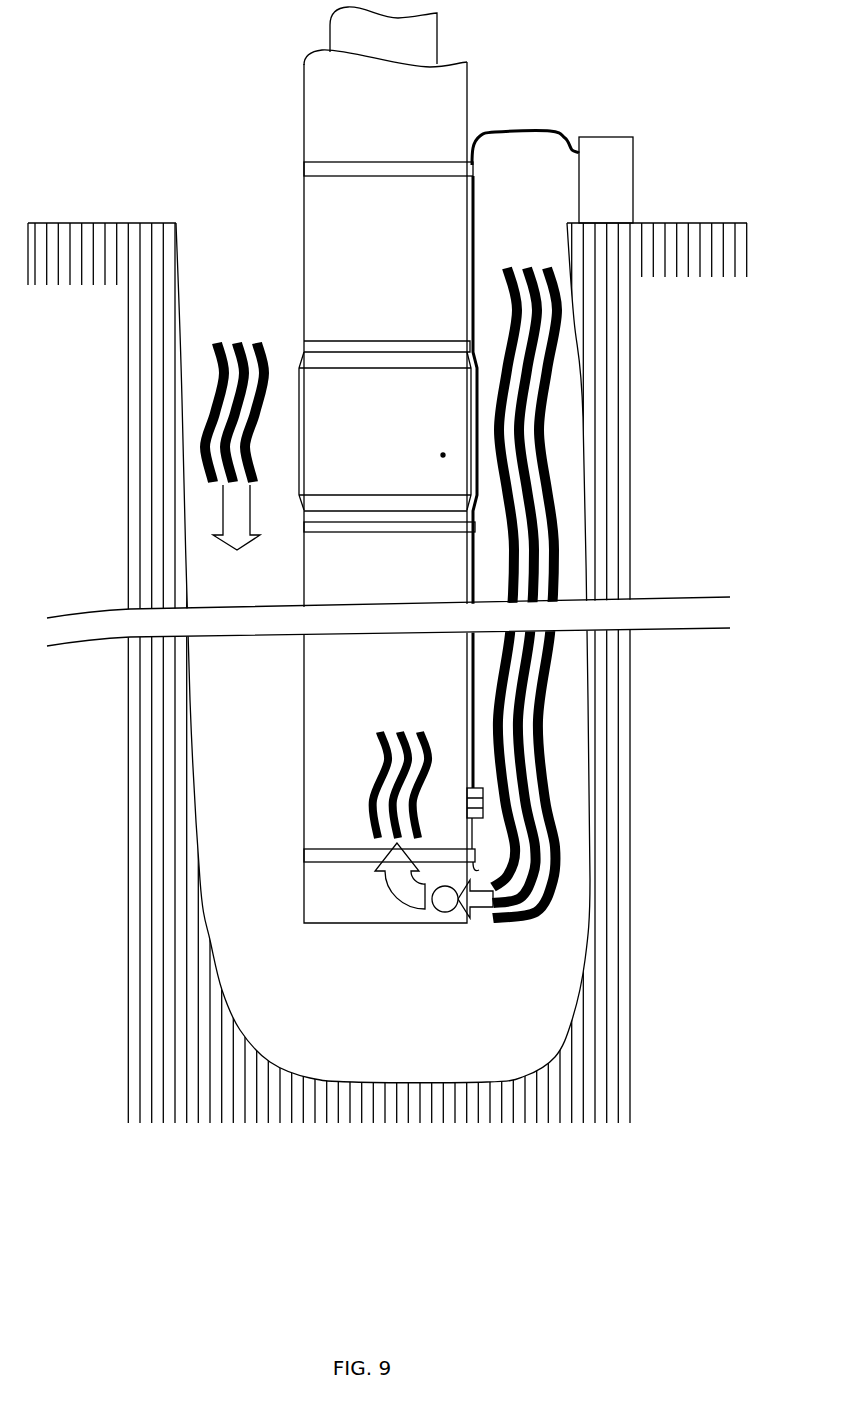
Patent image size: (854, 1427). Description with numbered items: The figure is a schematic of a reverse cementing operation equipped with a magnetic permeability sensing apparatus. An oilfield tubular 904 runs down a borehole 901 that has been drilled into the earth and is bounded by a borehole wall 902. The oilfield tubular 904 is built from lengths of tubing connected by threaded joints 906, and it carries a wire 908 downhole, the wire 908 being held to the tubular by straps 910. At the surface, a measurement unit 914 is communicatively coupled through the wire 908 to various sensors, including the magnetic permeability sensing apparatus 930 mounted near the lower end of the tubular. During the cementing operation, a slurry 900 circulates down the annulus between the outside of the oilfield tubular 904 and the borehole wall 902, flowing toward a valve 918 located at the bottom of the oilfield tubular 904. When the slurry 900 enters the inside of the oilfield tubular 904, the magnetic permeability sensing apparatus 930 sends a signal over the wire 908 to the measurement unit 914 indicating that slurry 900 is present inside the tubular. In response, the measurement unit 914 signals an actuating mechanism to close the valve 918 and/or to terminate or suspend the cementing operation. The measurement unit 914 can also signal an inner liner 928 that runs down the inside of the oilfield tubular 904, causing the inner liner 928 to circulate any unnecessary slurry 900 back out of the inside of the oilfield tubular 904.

The slurry 900 is at (532, 268).
The borehole 901 is at (302, 1029).
The borehole wall 902 is at (583, 417).
The oilfield tubular 904 is at (303, 142).
The threaded joint 906 is at (443, 455).
The wire 908 is at (545, 132).
The strap 910 is at (380, 162).
The measurement unit 914 is at (633, 187).
The valve 918 is at (448, 912).
The inner liner 928 is at (437, 52).
The magnetic permeability sensing apparatus 930 is at (467, 757).